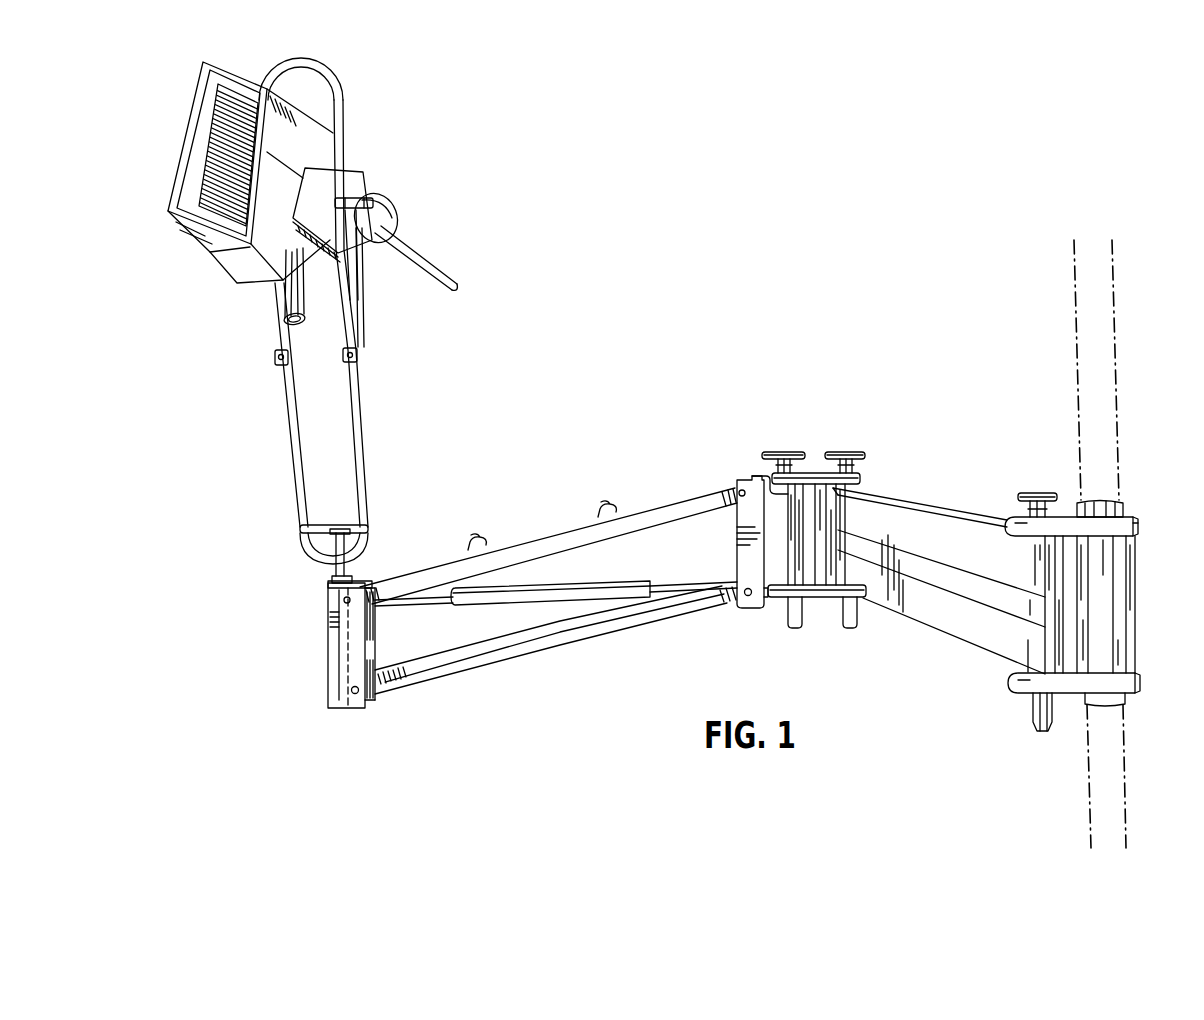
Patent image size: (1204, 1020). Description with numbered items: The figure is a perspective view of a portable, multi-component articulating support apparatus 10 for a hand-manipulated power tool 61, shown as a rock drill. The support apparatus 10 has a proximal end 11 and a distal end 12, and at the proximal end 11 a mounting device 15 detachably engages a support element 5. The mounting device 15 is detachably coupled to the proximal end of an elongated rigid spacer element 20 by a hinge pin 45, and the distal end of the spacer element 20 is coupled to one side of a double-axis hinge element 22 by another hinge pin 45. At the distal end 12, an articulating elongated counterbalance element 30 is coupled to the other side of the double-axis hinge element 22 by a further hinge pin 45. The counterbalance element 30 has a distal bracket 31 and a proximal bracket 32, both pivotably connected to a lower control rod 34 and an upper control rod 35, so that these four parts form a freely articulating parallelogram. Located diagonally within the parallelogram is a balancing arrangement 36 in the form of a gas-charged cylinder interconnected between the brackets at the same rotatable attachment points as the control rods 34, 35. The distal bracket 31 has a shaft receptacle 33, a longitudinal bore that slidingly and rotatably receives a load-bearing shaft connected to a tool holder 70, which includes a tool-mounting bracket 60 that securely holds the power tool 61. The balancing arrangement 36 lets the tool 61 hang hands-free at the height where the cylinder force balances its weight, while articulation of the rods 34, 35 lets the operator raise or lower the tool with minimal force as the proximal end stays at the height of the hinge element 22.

The support element 5 is at (1119, 424).
The articulating support apparatus 10 is at (693, 255).
The proximal end 11 is at (1076, 552).
The distal end 12 is at (288, 626).
The mounting device 15 is at (1137, 612).
The spacer element 20 is at (920, 508).
The double-axis hinge element 22 is at (815, 472).
The counterbalance element 30 is at (517, 496).
The distal bracket 31 is at (304, 697).
The proximal bracket 32 is at (744, 482).
The shaft receptacle 33 is at (333, 690).
The lower control rod 34 is at (600, 636).
The upper control rod 35 is at (636, 512).
The balancing arrangement 36 is at (517, 605).
The hinge pin 45 is at (775, 452).
The tool-mounting bracket 60 is at (316, 196).
The hand-manipulated power tool 61 is at (300, 140).
The tool holder 70 is at (260, 447).